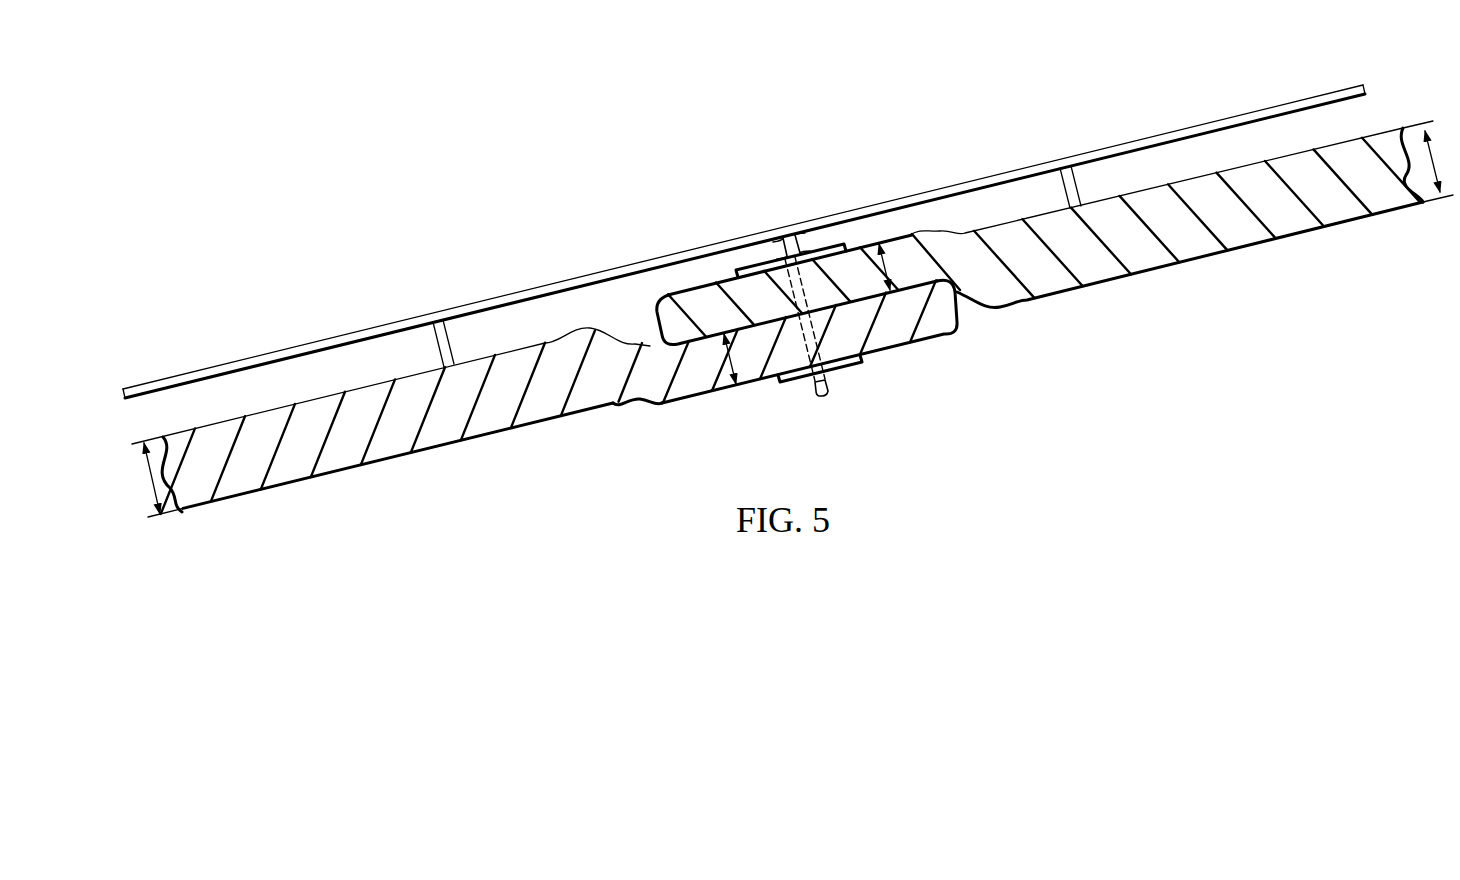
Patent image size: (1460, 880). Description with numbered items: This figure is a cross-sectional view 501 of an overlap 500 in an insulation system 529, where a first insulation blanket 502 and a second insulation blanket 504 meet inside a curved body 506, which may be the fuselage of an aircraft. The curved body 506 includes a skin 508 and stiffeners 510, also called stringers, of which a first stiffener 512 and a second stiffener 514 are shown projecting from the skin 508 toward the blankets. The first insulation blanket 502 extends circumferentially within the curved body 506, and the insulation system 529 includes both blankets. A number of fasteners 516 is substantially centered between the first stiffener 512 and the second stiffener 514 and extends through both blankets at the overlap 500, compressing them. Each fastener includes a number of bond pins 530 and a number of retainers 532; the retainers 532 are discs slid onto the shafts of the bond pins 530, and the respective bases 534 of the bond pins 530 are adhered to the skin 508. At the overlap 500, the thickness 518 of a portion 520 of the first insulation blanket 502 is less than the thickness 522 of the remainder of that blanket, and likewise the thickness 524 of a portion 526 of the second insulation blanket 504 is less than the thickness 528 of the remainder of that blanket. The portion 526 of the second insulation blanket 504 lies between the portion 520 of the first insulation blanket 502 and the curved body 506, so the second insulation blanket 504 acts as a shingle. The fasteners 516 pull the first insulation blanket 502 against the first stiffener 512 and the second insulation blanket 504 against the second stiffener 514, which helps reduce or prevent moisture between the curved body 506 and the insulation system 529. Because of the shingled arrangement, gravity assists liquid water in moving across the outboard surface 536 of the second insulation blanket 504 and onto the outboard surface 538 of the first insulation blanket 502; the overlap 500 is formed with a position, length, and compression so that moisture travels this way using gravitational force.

The overlap 500 is at (627, 246).
The view 501 is at (546, 138).
The first insulation blanket 502 is at (363, 430).
The second insulation blanket 504 is at (1233, 217).
The curved body 506 is at (190, 362).
The skin 508 is at (1285, 92).
The stiffeners 510 is at (385, 287).
The first stiffener 512 is at (453, 344).
The second stiffener 514 is at (1079, 192).
The number of fasteners 516 is at (768, 214).
The thickness 518 is at (733, 388).
The portion 520 is at (944, 317).
The thickness 522 is at (145, 481).
The thickness 524 is at (883, 244).
The portion 526 is at (656, 314).
The thickness 528 is at (1437, 128).
The insulation system 529 is at (574, 471).
The number of bond pins 530 is at (822, 397).
The number of retainers 532 is at (853, 372).
The bases 534 is at (840, 243).
The outboard surface 536 is at (1226, 160).
The outboard surface 538 is at (270, 397).